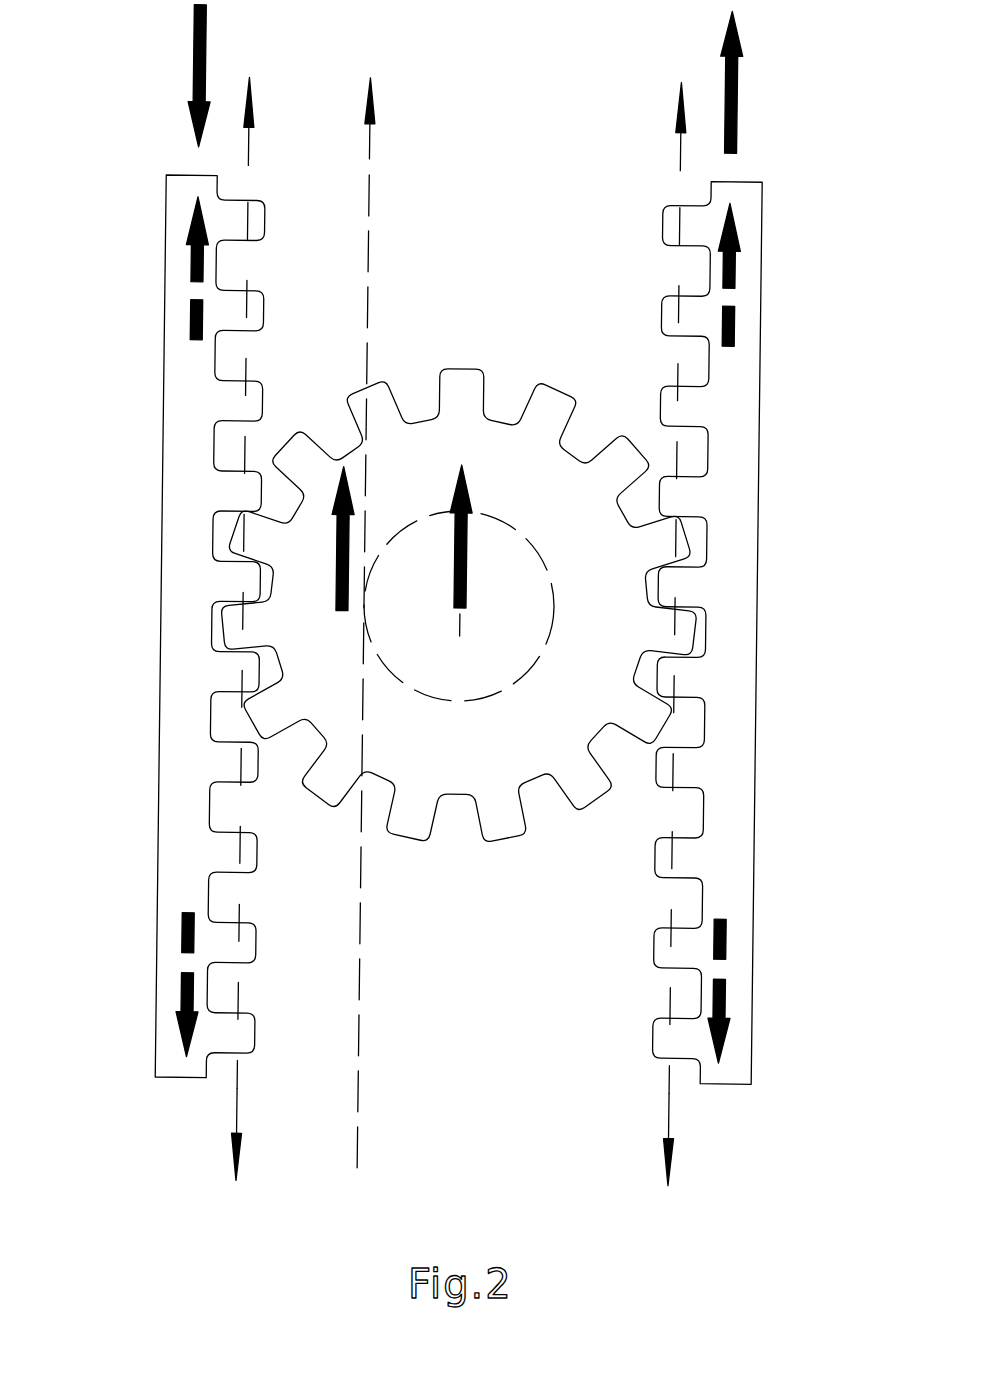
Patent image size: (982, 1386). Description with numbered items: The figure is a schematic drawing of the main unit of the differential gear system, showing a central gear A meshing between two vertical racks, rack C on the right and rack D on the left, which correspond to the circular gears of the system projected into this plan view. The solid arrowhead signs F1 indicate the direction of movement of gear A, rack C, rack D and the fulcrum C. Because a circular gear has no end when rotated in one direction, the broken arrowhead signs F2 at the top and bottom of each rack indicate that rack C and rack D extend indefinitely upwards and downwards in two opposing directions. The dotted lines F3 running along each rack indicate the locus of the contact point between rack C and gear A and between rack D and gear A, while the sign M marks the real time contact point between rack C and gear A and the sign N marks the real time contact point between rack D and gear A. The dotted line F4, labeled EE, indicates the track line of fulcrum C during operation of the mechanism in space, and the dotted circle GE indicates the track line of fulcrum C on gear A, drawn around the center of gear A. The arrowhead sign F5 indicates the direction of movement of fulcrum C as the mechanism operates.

The gear A is at (506, 826).
The dotted line (track line of fulcrum C on gear A) GE is at (480, 606).
The rack D is at (168, 652).
The rack / fulcrum C is at (741, 661).
The dotted line F4 (track line of fulcrum C in space) EE is at (365, 602).
The real time contact point N is at (234, 589).
The real time contact point M is at (687, 596).
The solid arrowhead sign F1 is at (190, 73).
The broken arrowhead sign F2 is at (186, 280).
The dotted line (locus of contact point) F3 is at (244, 120).
The dotted line (track line of fulcrum C) F4 is at (366, 119).
The arrowhead sign F5 is at (340, 574).